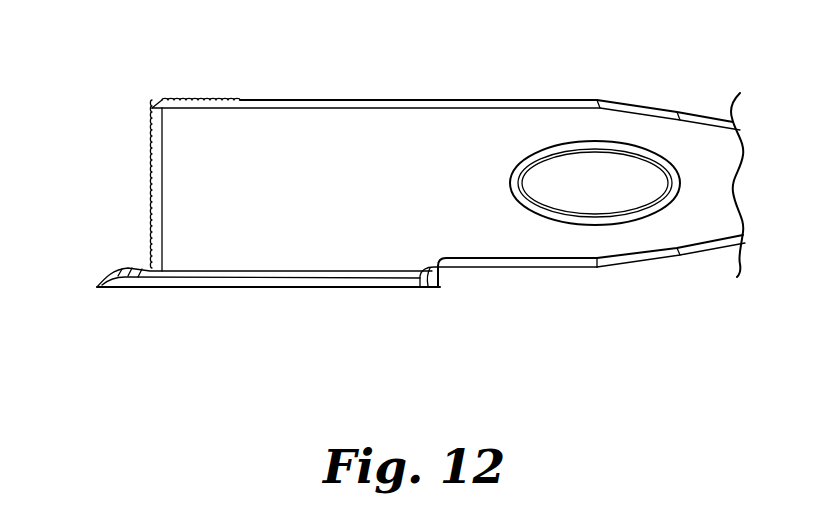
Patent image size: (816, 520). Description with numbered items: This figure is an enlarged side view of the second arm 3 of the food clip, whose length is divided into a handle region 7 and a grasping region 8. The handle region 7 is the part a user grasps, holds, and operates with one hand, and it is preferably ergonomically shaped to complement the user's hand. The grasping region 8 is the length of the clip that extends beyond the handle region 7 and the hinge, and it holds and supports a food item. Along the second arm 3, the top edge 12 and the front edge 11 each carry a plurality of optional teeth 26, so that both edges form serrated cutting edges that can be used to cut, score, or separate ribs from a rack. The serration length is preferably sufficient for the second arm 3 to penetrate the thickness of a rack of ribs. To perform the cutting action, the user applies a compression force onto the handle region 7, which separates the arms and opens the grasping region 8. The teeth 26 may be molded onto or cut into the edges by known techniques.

The second arm 3 is at (628, 100).
The handle region 7 is at (438, 303).
The grasping region 8 is at (438, 303).
The front edge 11 is at (155, 187).
The top edge 12 is at (207, 102).
The teeth 26 is at (223, 100).